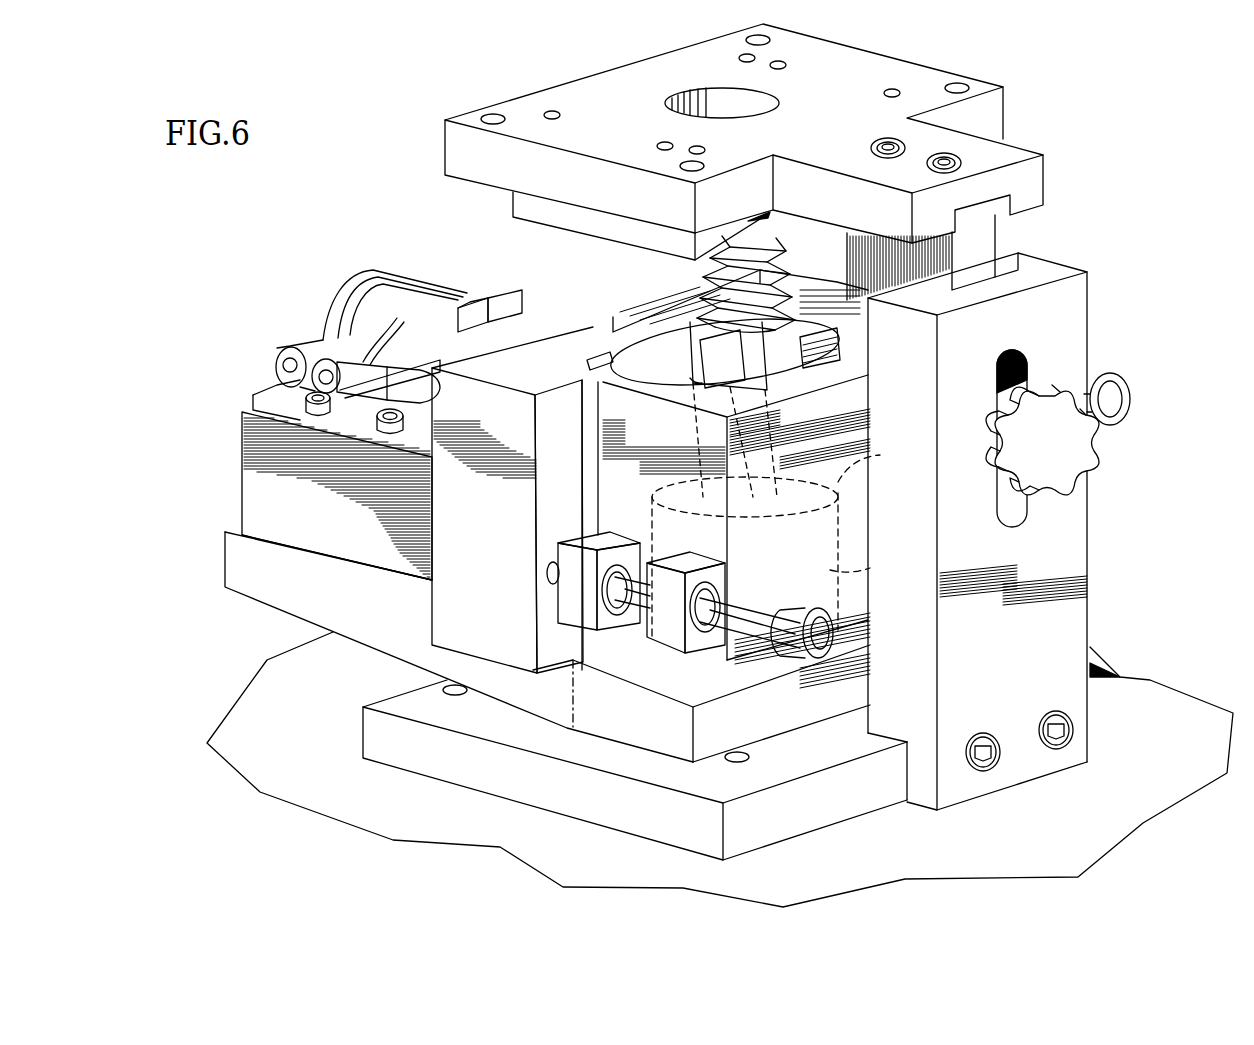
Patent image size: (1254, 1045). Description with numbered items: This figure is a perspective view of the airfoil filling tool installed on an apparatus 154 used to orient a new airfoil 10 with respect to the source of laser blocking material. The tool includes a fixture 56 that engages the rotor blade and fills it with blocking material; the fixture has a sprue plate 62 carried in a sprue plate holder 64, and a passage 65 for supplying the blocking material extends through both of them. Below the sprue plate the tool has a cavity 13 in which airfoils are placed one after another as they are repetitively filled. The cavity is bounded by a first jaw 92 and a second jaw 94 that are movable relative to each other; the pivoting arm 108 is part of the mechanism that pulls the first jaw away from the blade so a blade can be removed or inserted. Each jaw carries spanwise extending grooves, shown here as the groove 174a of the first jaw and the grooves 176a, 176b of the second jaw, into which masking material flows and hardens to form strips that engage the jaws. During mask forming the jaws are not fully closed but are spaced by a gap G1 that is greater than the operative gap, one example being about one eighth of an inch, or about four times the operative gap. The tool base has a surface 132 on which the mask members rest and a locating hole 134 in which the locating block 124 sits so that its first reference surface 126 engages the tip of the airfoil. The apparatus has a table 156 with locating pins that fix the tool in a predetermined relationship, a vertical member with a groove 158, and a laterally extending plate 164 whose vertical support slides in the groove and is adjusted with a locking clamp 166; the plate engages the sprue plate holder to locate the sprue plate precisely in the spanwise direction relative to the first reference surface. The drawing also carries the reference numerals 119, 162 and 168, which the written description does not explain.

The airfoil 10 is at (752, 345).
The cavity 13 is at (674, 359).
The fixture 56 is at (280, 590).
The sprue plate 62 is at (783, 222).
The sprue plate holder 64 is at (613, 228).
The passage 65 is at (723, 112).
The first jaw 92 is at (457, 628).
The second jaw 94 is at (622, 493).
The arm 108 is at (455, 287).
The opening in top plate 119 is at (765, 107).
The locating block 124 is at (860, 569).
The first reference surface 126 is at (868, 459).
The surface 132 is at (422, 597).
The locating hole 134 is at (745, 652).
The apparatus 154 is at (1103, 543).
The table 156 is at (1165, 710).
The groove 158 is at (1020, 381).
The upright 162 is at (983, 277).
The laterally extending plate 164 is at (1005, 155).
The locking clamp 166 is at (982, 233).
The knob 168 is at (1073, 455).
The groove 174a is at (587, 360).
The groove 176a is at (672, 380).
The groove 176b is at (842, 333).
The gap G1 is at (598, 370).